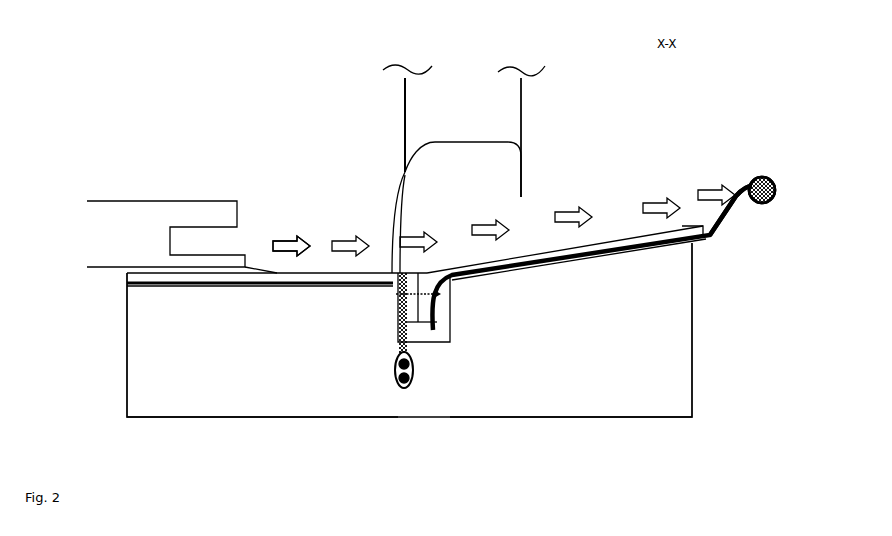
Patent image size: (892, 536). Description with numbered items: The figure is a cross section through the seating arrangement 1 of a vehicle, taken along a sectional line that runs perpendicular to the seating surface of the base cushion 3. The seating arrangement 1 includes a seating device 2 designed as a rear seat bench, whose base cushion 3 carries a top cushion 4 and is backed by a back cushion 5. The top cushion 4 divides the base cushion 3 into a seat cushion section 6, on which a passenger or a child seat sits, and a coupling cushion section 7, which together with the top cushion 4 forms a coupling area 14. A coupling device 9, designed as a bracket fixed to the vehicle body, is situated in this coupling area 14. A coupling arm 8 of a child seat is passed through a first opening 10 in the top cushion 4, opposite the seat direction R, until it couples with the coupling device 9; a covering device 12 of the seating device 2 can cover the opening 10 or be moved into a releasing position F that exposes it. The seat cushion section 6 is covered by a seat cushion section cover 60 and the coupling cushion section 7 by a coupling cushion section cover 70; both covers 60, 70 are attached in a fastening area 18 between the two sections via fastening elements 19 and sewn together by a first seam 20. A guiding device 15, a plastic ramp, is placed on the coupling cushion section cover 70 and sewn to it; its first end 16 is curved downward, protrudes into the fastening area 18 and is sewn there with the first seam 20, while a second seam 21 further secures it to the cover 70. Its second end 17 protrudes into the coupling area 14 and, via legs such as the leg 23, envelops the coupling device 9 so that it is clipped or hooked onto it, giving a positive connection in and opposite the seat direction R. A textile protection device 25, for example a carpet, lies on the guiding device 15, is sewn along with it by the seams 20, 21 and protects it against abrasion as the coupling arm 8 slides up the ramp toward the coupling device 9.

The seating arrangement 1 is at (183, 107).
The seating device 2 is at (183, 107).
The base cushion 3 is at (109, 390).
The top cushion 4 is at (467, 207).
The back cushion 5 is at (479, 116).
The seat cushion section 6 is at (244, 349).
The coupling cushion section 7 is at (569, 353).
The coupling arm 8 is at (138, 225).
The coupling device 9 is at (750, 178).
The first opening 10 is at (392, 237).
The covering device 12 is at (393, 197).
The releasing position F is at (393, 197).
The coupling area 14 is at (590, 158).
The guiding device 15 is at (722, 236).
The first end 16 is at (437, 330).
The second end 17 is at (777, 181).
The leg 23 is at (777, 181).
The fastening area 18 is at (419, 332).
The fastening elements 19 is at (398, 333).
The first seam 20 is at (402, 296).
The second seam 21 is at (679, 220).
The protection device 25 is at (577, 263).
The seat cushion section cover 60 is at (277, 275).
The coupling cushion section cover 70 is at (550, 265).
The seat direction R is at (127, 445).